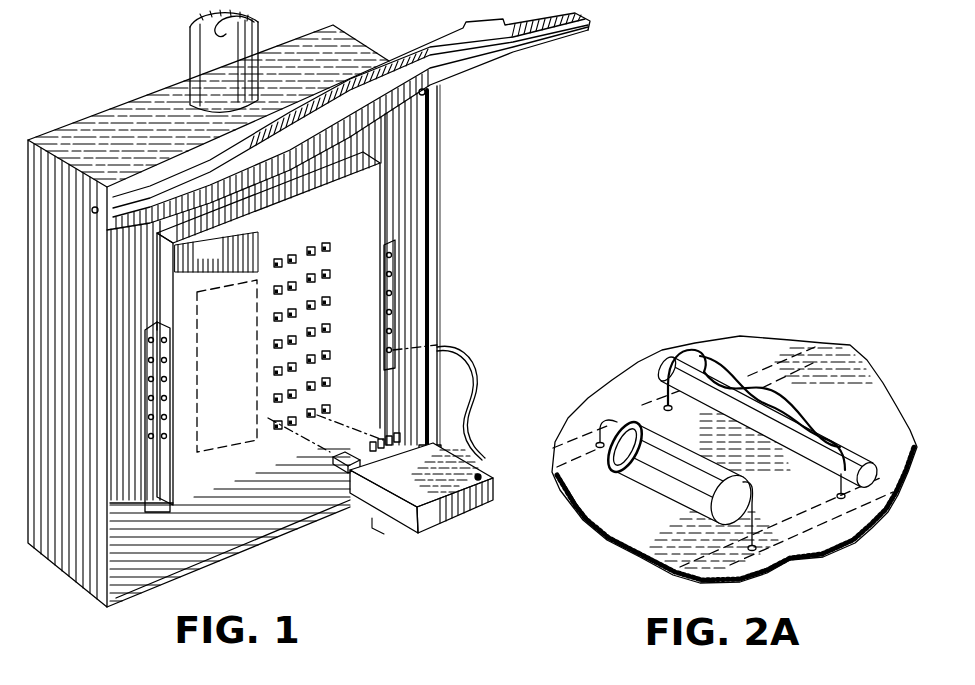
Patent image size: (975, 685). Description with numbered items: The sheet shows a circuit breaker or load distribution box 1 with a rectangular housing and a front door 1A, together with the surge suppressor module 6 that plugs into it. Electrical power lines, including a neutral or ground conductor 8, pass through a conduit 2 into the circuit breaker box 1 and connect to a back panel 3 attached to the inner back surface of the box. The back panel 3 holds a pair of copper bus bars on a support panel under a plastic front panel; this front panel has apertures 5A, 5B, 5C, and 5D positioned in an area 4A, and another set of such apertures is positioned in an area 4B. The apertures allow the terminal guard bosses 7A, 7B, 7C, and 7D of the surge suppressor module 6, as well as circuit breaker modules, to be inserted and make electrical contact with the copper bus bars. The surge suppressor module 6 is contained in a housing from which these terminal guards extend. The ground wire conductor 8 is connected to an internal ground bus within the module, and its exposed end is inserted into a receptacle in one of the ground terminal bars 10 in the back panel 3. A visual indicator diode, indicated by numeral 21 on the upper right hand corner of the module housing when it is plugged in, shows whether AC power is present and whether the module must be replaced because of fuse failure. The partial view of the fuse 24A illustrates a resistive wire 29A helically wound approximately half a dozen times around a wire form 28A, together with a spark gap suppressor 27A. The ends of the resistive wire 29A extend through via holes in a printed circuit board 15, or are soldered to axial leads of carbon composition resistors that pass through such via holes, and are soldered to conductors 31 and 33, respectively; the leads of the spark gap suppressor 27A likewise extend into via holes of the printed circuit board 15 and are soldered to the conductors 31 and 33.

In FIG. 1, the circuit breaker box 1 is at (135, 600).
In FIG. 1, the front door 1A is at (489, 62).
In FIG. 1, the conduit 2 is at (196, 37).
In FIG. 1, the back panel 3 is at (397, 243).
In FIG. 1, the area 4A is at (349, 222).
In FIG. 1, the area 4B is at (207, 280).
In FIG. 1, the aperture 5A is at (277, 260).
In FIG. 1, the aperture 5B is at (291, 255).
In FIG. 1, the aperture 5C is at (311, 247).
In FIG. 1, the aperture 5D is at (331, 250).
In FIG. 1, the surge suppressor module 6 is at (408, 530).
In FIG. 1, the terminal guard boss 7A is at (319, 478).
In FIG. 1, the terminal guard boss 7B is at (371, 469).
In FIG. 1, the terminal guard boss 7C is at (367, 440).
In FIG. 1, the terminal guard boss 7D is at (396, 440).
In FIG. 1, the ground wire conductor 8 is at (470, 424).
In FIG. 1, the ground terminal bar 10 is at (146, 362).
In FIG. 1, the visual indicator diode location 21 is at (477, 502).
In FIG. 2A, the printed circuit board 15 is at (840, 532).
In FIG. 2A, the fuse 24A is at (639, 575).
In FIG. 2A, the spark gap suppressor 27A is at (677, 490).
In FIG. 2A, the wire form 28A is at (857, 451).
In FIG. 2A, the resistive wire 29A is at (791, 407).
In FIG. 2A, the conductor 31 is at (782, 504).
In FIG. 2A, the conductor 33 is at (644, 404).